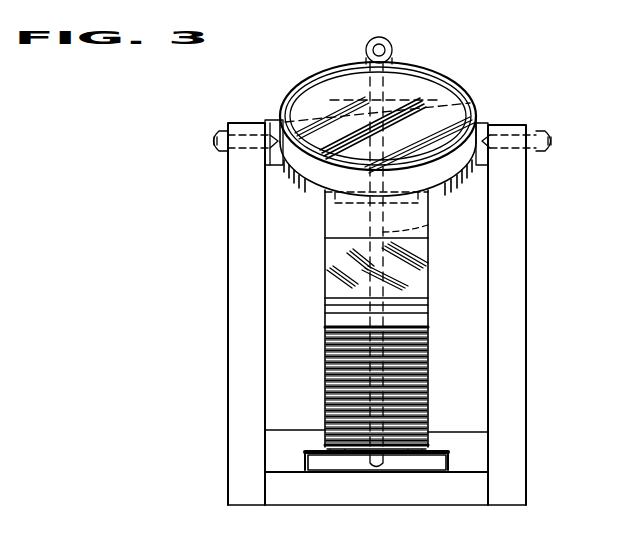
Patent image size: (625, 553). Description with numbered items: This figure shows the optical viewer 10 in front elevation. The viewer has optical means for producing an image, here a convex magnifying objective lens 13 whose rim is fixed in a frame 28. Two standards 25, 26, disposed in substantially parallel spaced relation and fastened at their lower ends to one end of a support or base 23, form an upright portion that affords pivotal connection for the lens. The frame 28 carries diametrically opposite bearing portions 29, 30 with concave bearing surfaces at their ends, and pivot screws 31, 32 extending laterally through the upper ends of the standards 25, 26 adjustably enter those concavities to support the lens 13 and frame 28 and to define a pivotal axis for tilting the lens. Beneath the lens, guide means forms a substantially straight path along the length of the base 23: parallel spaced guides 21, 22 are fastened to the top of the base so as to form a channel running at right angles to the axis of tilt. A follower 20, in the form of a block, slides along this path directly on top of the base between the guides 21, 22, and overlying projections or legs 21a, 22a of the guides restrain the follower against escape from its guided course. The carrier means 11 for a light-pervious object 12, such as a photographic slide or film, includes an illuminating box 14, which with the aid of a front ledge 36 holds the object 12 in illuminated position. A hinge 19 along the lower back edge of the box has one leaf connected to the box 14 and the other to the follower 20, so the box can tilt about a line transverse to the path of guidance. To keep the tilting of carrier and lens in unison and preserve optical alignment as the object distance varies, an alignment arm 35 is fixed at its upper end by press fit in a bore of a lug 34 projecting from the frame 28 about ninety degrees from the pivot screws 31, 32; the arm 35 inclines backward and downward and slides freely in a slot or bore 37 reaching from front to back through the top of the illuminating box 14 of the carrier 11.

The optical viewer 10 is at (533, 62).
The carrier means 11 is at (432, 295).
The light-pervious object 12 is at (420, 268).
The objective lens 13 is at (323, 112).
The illuminating box 14 is at (325, 333).
The hinge 19 is at (412, 456).
The follower 20 is at (340, 470).
The guide 21 is at (303, 462).
The overlying projection or leg 21a is at (314, 438).
The guide 22 is at (450, 462).
The overlying projection or leg 22a is at (436, 440).
The base 23 is at (405, 506).
The standard 25 is at (228, 250).
The standard 26 is at (526, 250).
The frame 28 is at (455, 86).
The bearing portion 29 is at (273, 122).
The bearing portion 30 is at (484, 128).
The pivot screw 31 is at (224, 130).
The pivot screw 32 is at (540, 130).
The lug 34 is at (394, 46).
The alignment arm 35 is at (428, 223).
The front ledge 36 is at (420, 316).
The slot or bore 37 is at (355, 205).